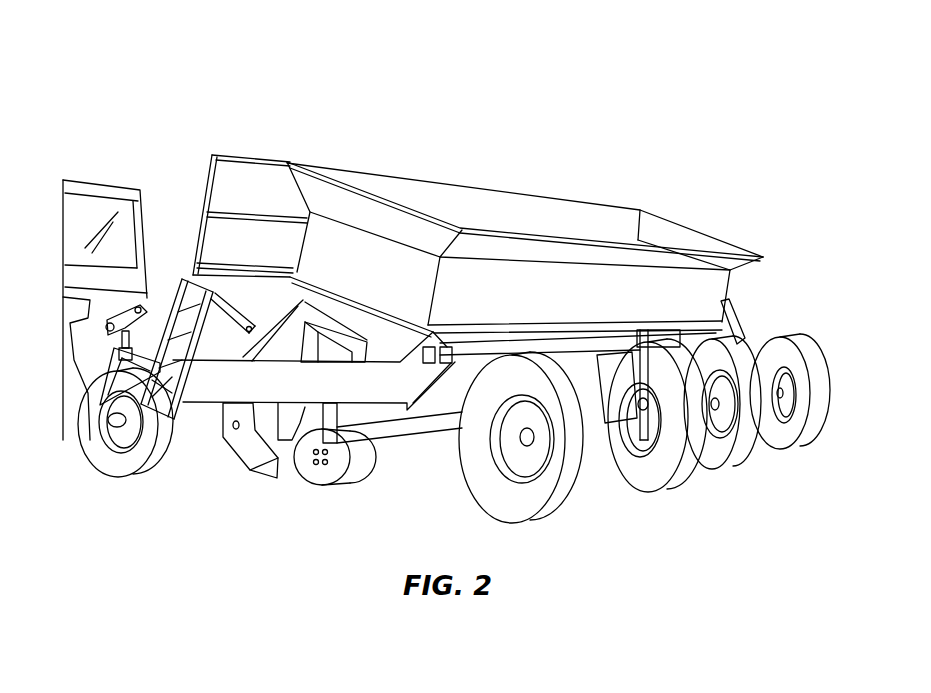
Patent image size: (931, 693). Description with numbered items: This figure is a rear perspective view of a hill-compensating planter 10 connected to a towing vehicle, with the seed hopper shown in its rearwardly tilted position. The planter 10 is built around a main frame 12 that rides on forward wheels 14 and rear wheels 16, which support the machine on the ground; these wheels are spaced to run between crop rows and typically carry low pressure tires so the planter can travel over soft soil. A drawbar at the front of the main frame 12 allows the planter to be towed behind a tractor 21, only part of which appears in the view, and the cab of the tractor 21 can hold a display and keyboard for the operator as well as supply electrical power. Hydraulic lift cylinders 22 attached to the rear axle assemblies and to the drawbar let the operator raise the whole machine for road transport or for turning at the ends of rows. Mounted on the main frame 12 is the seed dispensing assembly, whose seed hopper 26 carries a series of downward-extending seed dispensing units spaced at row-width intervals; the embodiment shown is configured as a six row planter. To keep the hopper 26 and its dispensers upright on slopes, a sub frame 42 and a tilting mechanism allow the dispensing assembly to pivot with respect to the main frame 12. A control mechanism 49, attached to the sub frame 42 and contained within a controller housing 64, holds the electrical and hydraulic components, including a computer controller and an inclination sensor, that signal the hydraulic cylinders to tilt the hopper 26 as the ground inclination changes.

The hill-compensating planter 10 is at (220, 85).
The main frame 12 is at (208, 395).
The forward wheels 14 is at (110, 464).
The rear wheels 16 is at (750, 360).
The tractor 21 is at (100, 183).
The hydraulic lift cylinders 22 is at (728, 315).
The seed hopper 26 is at (647, 288).
The sub frame 42 is at (285, 287).
The control mechanism 49 is at (369, 230).
The controller housing 64 is at (327, 343).